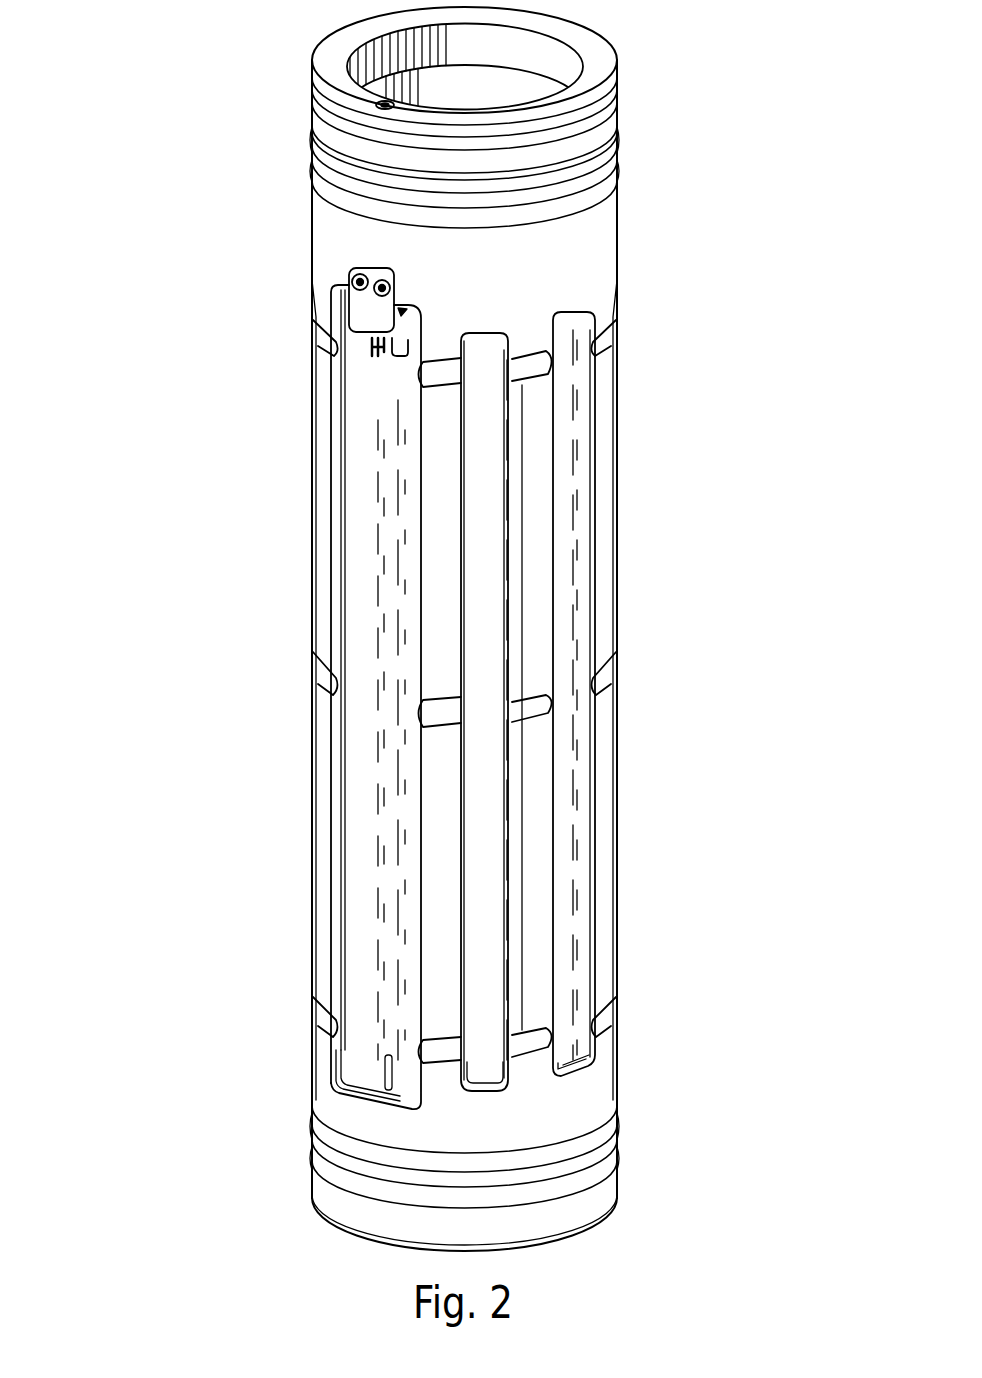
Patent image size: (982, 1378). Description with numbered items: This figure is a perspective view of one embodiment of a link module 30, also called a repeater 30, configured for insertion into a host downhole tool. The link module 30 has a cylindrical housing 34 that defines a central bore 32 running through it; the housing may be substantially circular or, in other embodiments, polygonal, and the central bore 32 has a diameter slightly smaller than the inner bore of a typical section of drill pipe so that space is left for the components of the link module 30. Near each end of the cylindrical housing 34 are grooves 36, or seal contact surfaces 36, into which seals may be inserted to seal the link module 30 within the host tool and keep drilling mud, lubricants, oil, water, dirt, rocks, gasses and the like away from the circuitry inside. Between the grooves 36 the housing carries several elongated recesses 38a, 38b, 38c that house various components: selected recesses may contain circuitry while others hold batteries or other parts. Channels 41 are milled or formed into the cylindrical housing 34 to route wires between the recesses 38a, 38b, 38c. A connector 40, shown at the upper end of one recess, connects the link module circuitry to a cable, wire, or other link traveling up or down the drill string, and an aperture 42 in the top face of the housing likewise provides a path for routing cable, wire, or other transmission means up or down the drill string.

The link module 30 is at (428, 629).
The central bore 32 is at (488, 87).
The cylindrical housing 34 is at (590, 248).
The grooves 36 is at (597, 187).
The recess 38a is at (577, 462).
The recess 38b is at (493, 598).
The recess 38c is at (367, 637).
The connector 40 is at (367, 313).
The channels 41 is at (560, 705).
The aperture 42 is at (383, 103).